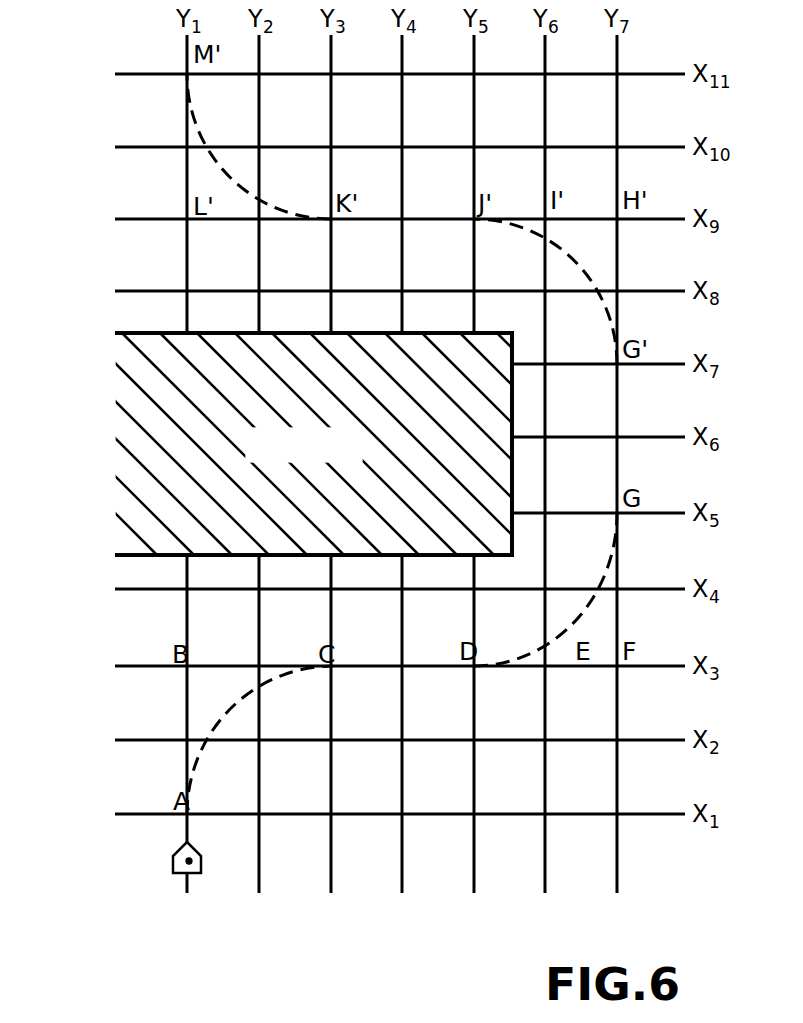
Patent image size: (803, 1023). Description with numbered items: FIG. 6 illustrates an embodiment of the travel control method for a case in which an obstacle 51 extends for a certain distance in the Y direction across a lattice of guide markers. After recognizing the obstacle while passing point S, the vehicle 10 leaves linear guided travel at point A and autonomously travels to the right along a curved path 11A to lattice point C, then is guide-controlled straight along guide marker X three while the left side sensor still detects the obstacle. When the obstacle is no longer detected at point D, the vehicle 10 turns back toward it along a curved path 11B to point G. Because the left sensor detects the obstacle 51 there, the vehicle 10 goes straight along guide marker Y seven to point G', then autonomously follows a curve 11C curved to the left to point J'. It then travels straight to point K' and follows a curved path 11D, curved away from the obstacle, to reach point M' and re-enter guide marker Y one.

The vehicle 10 is at (180, 873).
The curved path 11A is at (267, 683).
The curved path 11B is at (603, 573).
The curve 11C is at (553, 239).
The curved path 11D is at (192, 123).
The obstacle 51 is at (128, 355).